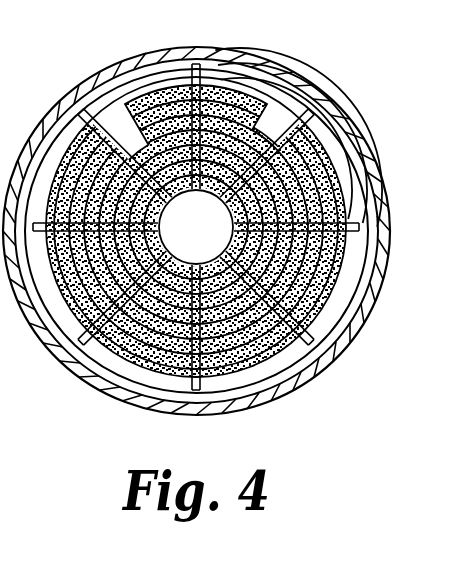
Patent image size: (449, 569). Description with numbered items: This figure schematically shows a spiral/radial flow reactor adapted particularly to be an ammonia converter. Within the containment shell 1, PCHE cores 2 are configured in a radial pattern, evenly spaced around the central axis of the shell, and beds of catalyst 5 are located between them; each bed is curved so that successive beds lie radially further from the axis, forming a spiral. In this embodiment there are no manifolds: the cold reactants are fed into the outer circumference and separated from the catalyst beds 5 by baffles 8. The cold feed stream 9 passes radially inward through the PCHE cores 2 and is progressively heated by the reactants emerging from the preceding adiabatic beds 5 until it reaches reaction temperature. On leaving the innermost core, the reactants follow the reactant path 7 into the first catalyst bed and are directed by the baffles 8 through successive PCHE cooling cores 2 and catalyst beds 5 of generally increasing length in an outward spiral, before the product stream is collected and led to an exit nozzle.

The containment shell 1 is at (282, 393).
The PCHE core 2 is at (305, 90).
The catalyst bed 5 is at (62, 160).
The reactant path 7 is at (80, 128).
The baffle 8 is at (340, 147).
The cold feed stream 9 is at (188, 76).